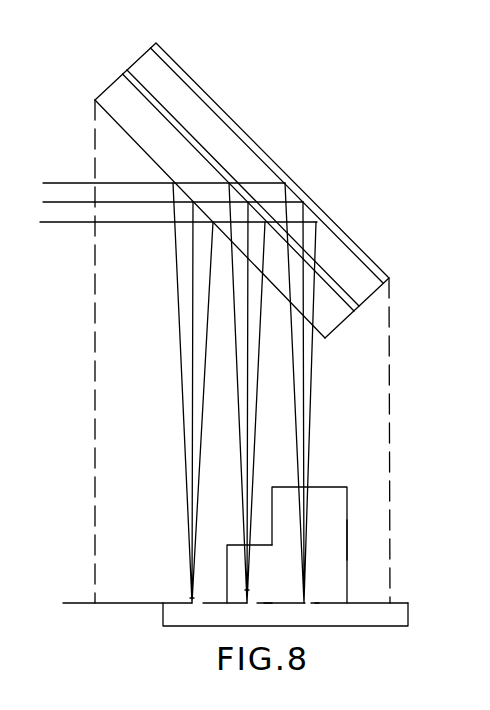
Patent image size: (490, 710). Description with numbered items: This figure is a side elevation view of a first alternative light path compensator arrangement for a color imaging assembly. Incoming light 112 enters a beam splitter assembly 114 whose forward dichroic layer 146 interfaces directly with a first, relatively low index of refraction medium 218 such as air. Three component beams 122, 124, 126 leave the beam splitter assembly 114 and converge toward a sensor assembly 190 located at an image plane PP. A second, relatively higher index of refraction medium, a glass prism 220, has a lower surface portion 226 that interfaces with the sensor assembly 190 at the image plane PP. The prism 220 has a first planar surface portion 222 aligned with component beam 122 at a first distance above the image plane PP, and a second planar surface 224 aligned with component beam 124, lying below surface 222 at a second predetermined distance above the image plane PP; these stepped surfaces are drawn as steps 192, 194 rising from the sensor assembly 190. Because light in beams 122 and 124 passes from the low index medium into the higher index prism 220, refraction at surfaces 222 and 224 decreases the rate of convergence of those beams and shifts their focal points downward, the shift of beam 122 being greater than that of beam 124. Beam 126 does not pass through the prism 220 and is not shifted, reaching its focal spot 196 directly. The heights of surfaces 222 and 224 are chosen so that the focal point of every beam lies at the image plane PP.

The incident light beam 112 is at (49, 202).
The beam splitter assembly 114 is at (252, 134).
The forward dichroic layer 146 is at (94, 100).
The first relatively low index of refraction medium 218 is at (108, 288).
The component beam 122 is at (315, 345).
The component beam 124 is at (250, 372).
The component beam 126 is at (192, 345).
The sensor assembly 190 is at (416, 603).
The step 192 is at (340, 460).
The step 194 is at (226, 602).
The focal spot 196 is at (192, 601).
The glass prism 220 is at (347, 535).
The first planar surface portion 222 is at (268, 603).
The second planar surface 224 is at (248, 588).
The lower surface portion 226 is at (315, 603).
The image plane PP is at (75, 600).